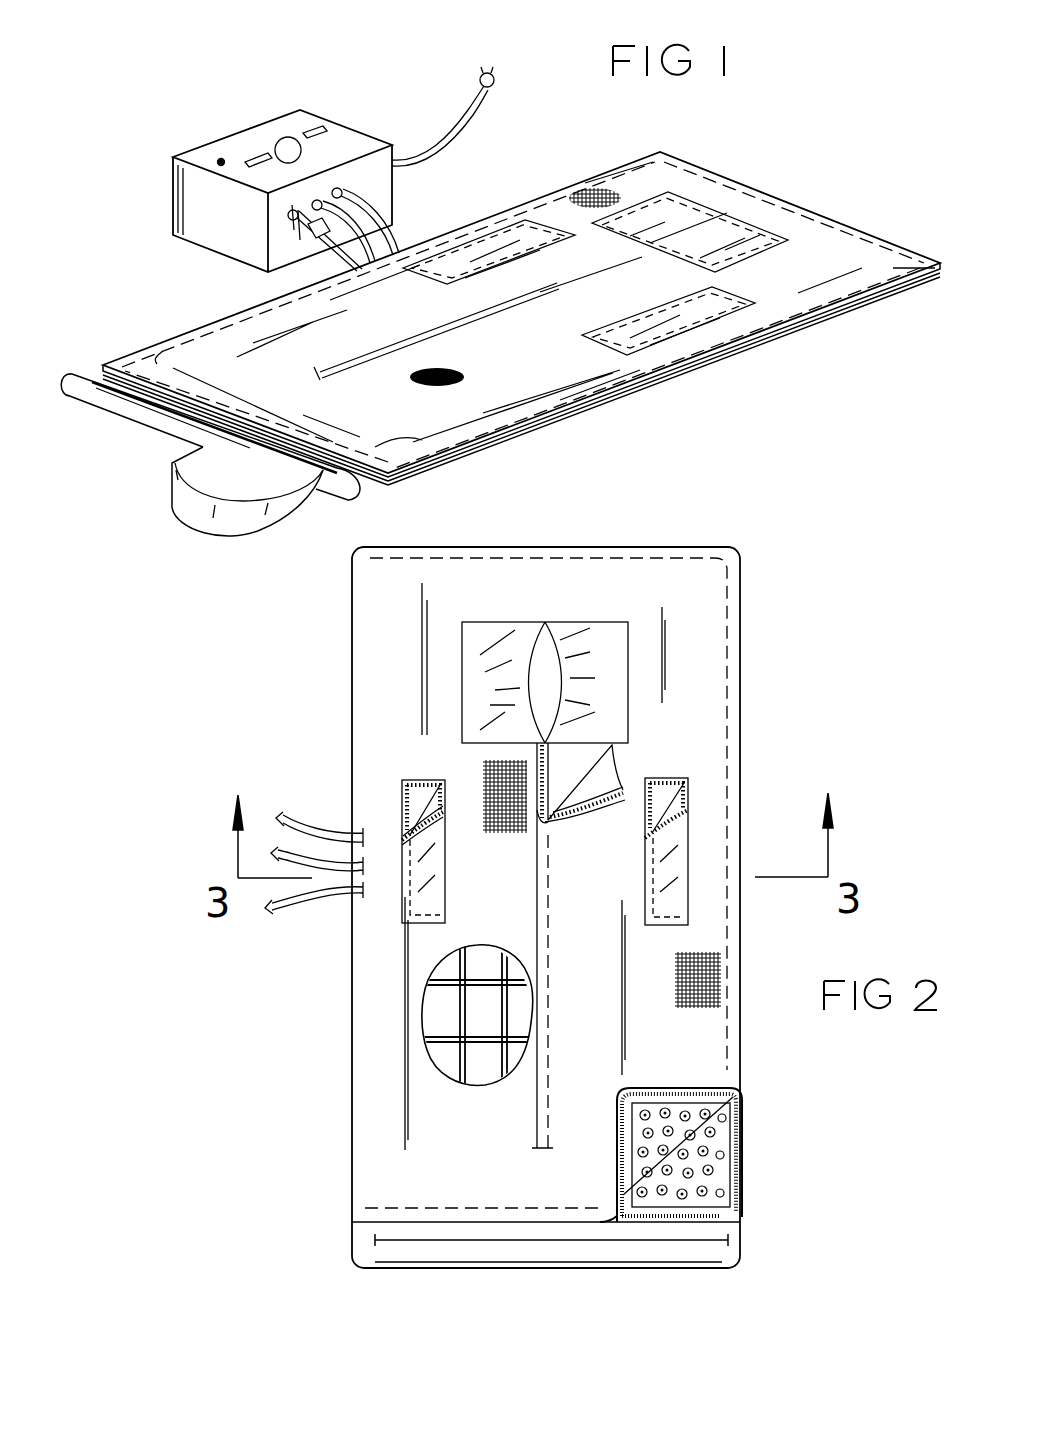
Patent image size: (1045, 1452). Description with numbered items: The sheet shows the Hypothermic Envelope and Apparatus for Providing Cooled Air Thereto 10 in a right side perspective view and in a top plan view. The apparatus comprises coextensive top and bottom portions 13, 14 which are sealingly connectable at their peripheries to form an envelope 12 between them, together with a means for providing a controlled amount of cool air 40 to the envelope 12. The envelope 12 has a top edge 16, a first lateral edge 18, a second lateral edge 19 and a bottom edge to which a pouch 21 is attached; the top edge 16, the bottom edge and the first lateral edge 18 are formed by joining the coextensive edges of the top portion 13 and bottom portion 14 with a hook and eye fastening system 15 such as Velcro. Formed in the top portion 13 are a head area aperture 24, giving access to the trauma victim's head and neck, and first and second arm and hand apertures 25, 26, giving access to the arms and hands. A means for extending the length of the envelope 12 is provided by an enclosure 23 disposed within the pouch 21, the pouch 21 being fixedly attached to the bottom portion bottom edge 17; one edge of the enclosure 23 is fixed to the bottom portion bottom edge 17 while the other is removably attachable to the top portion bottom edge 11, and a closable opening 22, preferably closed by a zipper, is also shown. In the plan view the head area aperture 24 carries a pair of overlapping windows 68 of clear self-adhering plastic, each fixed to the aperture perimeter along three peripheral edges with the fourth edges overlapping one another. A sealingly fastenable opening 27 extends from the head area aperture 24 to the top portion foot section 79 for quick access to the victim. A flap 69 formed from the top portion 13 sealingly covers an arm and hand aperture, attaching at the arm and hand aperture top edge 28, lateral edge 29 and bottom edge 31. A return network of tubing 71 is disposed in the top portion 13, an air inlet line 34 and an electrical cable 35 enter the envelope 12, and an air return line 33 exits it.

In FIG. 1, the Hypothermic Envelope and Apparatus for Providing Cooled Air Thereto 10 is at (178, 285).
In FIG. 2, the top portion bottom edge 11 is at (632, 1215).
In FIG. 1, the envelope 12 is at (778, 342).
In FIG. 1, the top portion 13 is at (835, 250).
In FIG. 2, the top portion 13 is at (705, 597).
In FIG. 2, the bottom portion 14 is at (712, 1170).
In FIG. 2, the hook and eye fastening system 15 is at (735, 1110).
In FIG. 1, the top edge 16 is at (780, 200).
In FIG. 2, the bottom portion bottom edge 17 is at (740, 1215).
In FIG. 1, the first lateral edge 18 is at (607, 393).
In FIG. 1, the second lateral edge 19 is at (522, 195).
In FIG. 1, the pouch 21 is at (160, 418).
In FIG. 2, the closable opening 22 is at (472, 1242).
In FIG. 1, the enclosure 23 is at (235, 515).
In FIG. 1, the head area aperture 24 is at (690, 222).
In FIG. 2, the head area aperture 24 is at (588, 633).
In FIG. 1, the first arm and hand aperture 25 is at (683, 318).
In FIG. 1, the second arm and hand aperture 26 is at (470, 256).
In FIG. 2, the sealingly fastenable opening 27 is at (537, 757).
In FIG. 2, the arm and hand aperture top edge 28 is at (420, 780).
In FIG. 2, the arm and hand aperture lateral edge 29 is at (402, 806).
In FIG. 2, the arm and hand aperture bottom edge 31 is at (413, 920).
In FIG. 2, the air return line 33 is at (325, 895).
In FIG. 2, the air inlet line 34 is at (300, 815).
In FIG. 2, the electrical cable 35 is at (308, 862).
In FIG. 1, the means for providing a controlled amount of cool air 40 is at (345, 100).
In FIG. 2, the overlapping windows 68 is at (614, 682).
In FIG. 2, the flap 69 is at (687, 802).
In FIG. 2, the return network of tubing 71 is at (463, 1010).
In FIG. 1, the top portion foot section 79 is at (380, 398).